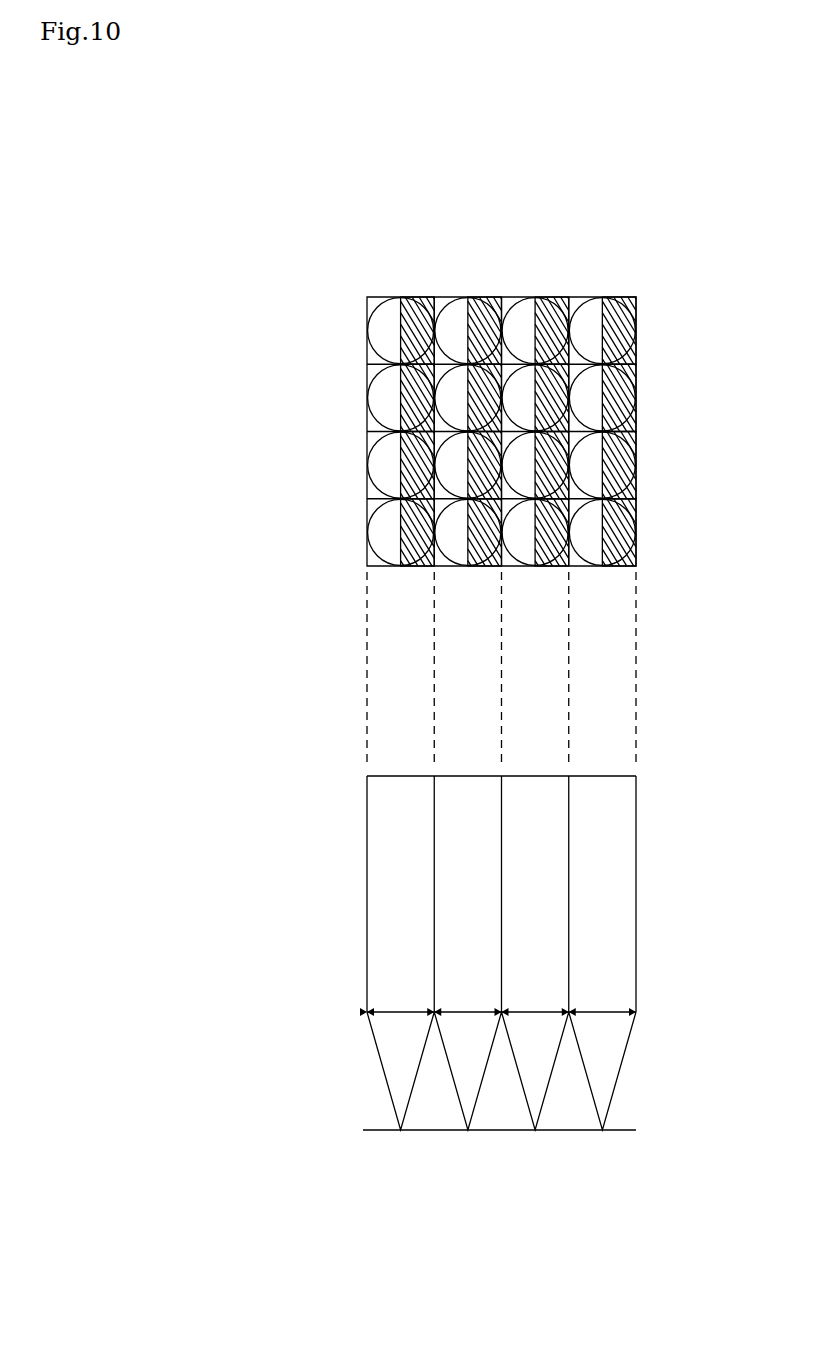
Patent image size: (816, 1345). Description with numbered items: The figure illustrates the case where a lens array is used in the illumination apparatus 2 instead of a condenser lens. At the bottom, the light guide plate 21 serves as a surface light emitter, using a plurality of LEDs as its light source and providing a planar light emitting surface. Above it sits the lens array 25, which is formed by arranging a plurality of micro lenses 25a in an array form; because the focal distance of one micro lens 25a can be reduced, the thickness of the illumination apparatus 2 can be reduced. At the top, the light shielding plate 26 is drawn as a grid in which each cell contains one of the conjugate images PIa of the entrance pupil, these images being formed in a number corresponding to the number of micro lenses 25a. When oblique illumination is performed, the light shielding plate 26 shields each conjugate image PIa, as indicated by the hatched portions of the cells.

The illumination apparatus 2 is at (472, 1065).
The light guide plate 21 is at (363, 1130).
The lens array 25 is at (434, 1033).
The micro lens 25a is at (395, 1010).
The light shielding plate 26 is at (496, 431).
The conjugate image of the entrance pupil PIa is at (367, 550).